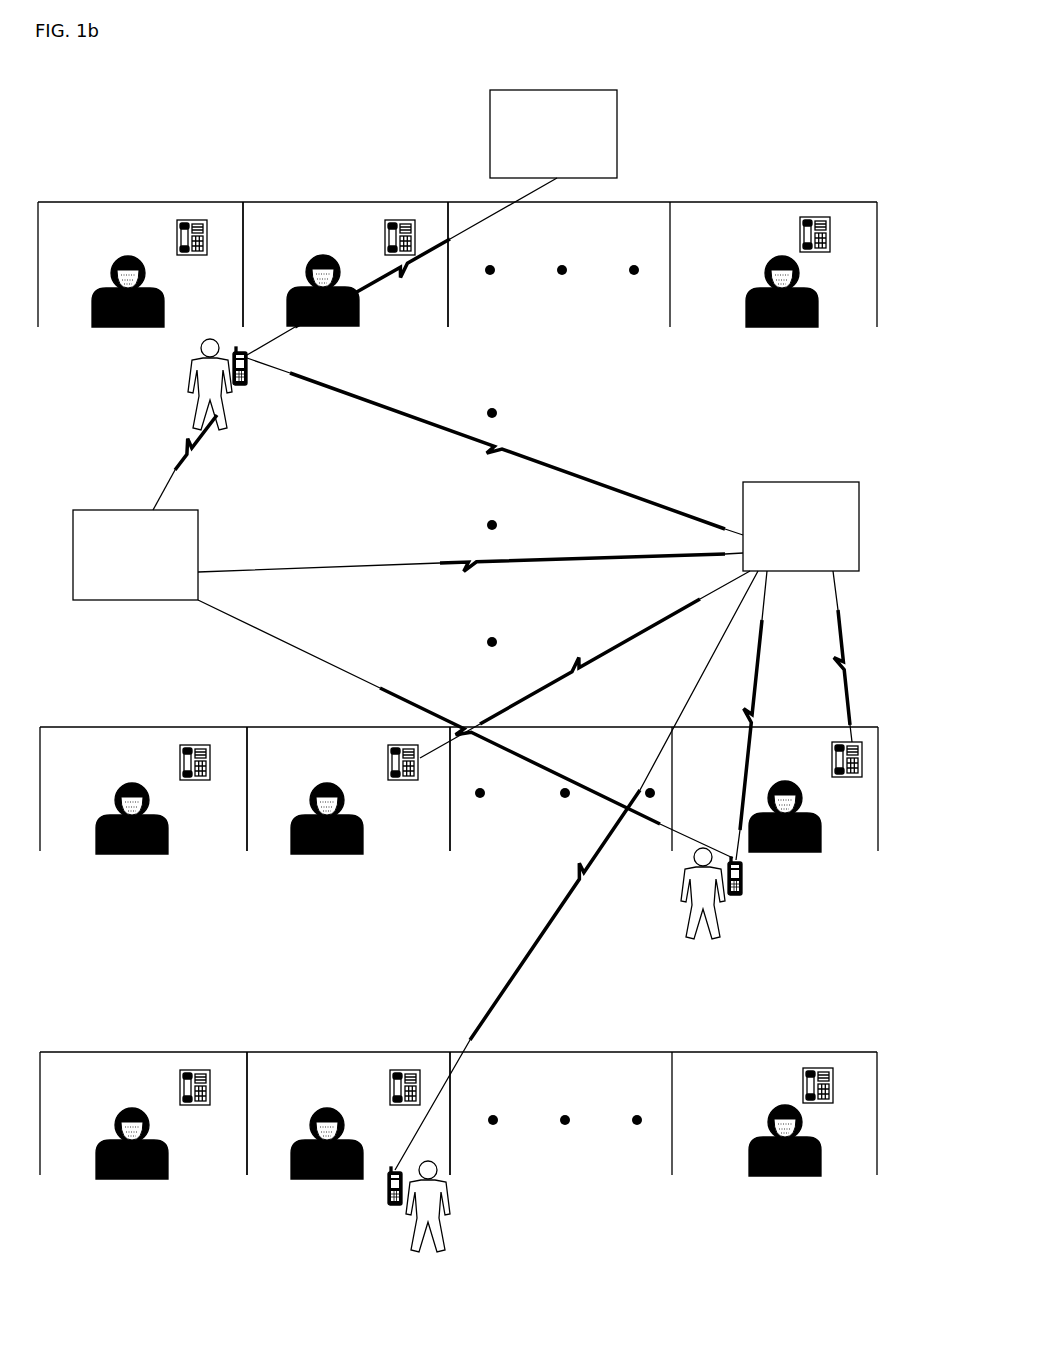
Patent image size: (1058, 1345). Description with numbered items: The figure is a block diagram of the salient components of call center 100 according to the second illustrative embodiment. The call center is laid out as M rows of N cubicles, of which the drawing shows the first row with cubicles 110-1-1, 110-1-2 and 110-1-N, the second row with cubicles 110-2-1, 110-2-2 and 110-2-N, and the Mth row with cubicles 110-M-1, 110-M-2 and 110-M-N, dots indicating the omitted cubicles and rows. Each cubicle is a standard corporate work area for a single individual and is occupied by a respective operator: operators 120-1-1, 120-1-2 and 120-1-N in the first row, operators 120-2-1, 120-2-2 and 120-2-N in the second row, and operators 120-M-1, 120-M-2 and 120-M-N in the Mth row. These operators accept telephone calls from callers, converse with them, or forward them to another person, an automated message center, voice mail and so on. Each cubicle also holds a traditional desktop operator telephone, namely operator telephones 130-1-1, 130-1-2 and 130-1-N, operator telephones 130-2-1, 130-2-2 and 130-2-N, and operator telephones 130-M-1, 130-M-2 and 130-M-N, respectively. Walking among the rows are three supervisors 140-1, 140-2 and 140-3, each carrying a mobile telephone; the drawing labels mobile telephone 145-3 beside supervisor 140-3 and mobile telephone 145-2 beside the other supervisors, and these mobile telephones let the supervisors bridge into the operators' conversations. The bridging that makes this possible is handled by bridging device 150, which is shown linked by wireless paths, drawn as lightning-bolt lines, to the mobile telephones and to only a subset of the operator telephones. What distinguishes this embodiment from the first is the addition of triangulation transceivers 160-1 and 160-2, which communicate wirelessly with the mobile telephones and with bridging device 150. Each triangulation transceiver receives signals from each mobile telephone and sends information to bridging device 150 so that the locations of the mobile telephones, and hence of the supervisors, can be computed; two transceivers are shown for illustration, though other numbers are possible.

The call center 100 is at (320, 90).
The cubicle 110-M-1 is at (140, 264).
The cubicle 110-M-2 is at (345, 264).
The cubicle 110-M-N is at (773, 264).
The cubicle 110-2-1 is at (143, 789).
The cubicle 110-2-2 is at (348, 789).
The cubicle 110-2-N is at (775, 789).
The cubicle 110-1-1 is at (143, 1113).
The cubicle 110-1-2 is at (348, 1113).
The cubicle 110-1-N is at (774, 1113).
The operator 120-M-1 is at (143, 327).
The operator 120-M-2 is at (323, 326).
The operator 120-M-N is at (782, 327).
The operator 120-2-1 is at (132, 851).
The operator 120-2-2 is at (327, 851).
The operator 120-2-N is at (785, 851).
The operator 120-1-1 is at (132, 1175).
The operator 120-1-2 is at (325, 1175).
The operator 120-1-N is at (785, 1175).
The operator telephone 130-M-1 is at (191, 220).
The operator telephone 130-M-2 is at (399, 220).
The operator telephone 130-M-N is at (815, 217).
The operator telephone 130-2-1 is at (194, 745).
The operator telephone 130-2-2 is at (404, 745).
The operator telephone 130-2-N is at (846, 742).
The operator telephone 130-1-1 is at (194, 1070).
The operator telephone 130-1-2 is at (406, 1070).
The operator telephone 130-1-N is at (818, 1068).
The supervisor 140-1 is at (443, 1222).
The supervisor 140-2 is at (688, 910).
The supervisor 140-3 is at (195, 404).
The mobile telephone 145-2 is at (735, 893).
The mobile telephone 145-3 is at (240, 385).
The bridging device 150 is at (801, 526).
The triangulation transceiver 160-1 is at (553, 134).
The triangulation transceiver 160-2 is at (135, 555).